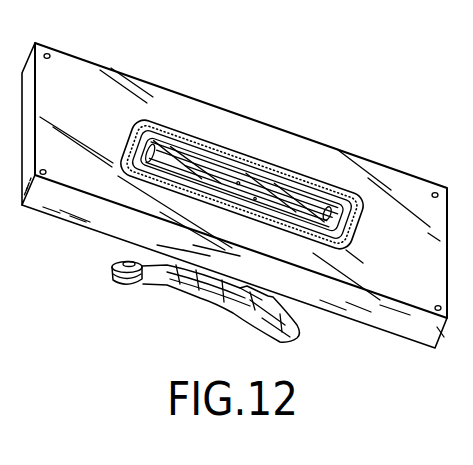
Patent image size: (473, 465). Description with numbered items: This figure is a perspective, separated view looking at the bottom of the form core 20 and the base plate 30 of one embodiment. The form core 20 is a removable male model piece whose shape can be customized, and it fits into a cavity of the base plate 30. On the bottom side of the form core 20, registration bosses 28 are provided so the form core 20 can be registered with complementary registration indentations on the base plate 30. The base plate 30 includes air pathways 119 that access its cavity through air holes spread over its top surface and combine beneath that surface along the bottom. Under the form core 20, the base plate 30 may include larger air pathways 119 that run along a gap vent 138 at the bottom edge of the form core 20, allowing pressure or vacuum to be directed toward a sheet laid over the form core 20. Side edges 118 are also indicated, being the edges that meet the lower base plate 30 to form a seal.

The side edges 118 is at (413, 332).
The base plate 30 is at (289, 137).
The gap vent 138 is at (150, 122).
The air pathways 119 is at (310, 182).
The form core 20 is at (179, 302).
The registration bosses 28 is at (159, 288).